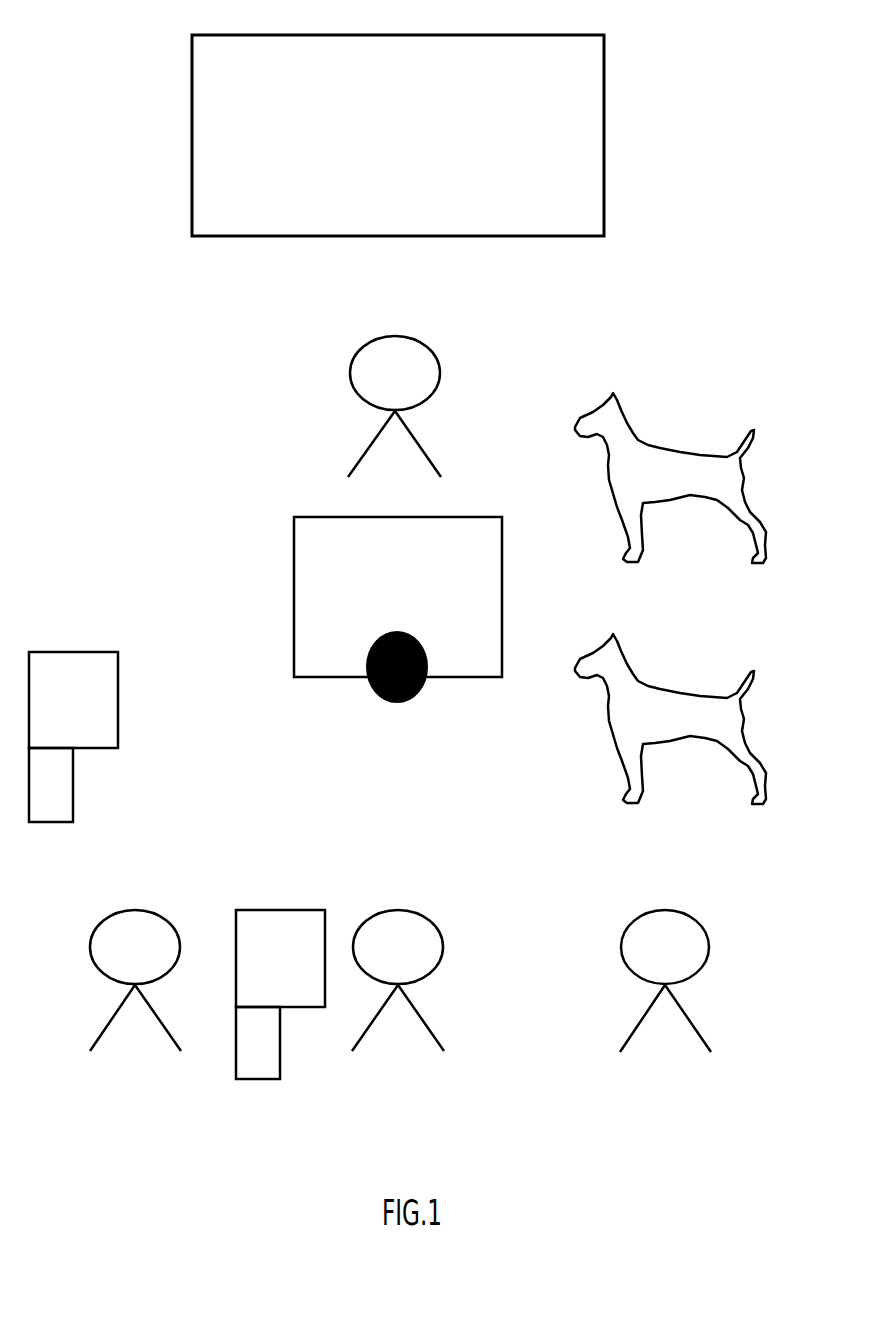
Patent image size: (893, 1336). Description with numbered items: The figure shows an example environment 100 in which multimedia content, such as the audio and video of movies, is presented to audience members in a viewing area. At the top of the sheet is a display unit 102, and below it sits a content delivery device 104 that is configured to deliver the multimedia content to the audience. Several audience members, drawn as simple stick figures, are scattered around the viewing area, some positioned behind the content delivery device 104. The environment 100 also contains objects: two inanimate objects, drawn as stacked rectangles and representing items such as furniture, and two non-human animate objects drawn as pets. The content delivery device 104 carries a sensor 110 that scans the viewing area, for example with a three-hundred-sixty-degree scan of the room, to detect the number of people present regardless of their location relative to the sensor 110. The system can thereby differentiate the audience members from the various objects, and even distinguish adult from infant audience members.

The environment 100 is at (686, 69).
The display unit 102 is at (604, 190).
The content delivery device 104 is at (294, 605).
The sensor 110 is at (413, 696).